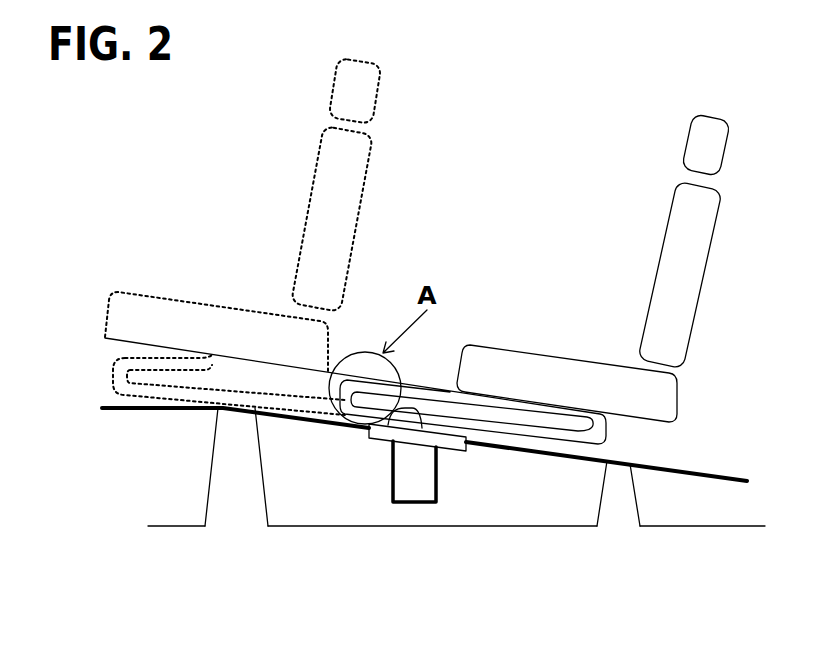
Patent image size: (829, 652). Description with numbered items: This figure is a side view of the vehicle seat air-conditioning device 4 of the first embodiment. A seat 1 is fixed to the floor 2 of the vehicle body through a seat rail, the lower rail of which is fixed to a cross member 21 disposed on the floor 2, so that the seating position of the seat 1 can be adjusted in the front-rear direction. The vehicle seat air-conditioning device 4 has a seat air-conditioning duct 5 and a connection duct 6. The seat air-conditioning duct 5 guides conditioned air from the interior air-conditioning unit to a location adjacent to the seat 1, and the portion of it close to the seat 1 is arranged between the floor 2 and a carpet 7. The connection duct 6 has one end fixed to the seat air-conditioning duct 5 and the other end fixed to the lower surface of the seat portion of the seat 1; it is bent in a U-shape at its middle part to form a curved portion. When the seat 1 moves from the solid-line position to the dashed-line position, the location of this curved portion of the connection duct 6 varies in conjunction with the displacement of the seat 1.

The seat 1 is at (700, 212).
The floor 2 is at (293, 527).
The vehicle seat air-conditioning device 4 is at (355, 476).
The seat air-conditioning duct 5 is at (420, 487).
The connection duct 6 is at (507, 431).
The carpet 7 is at (720, 468).
The cross member 21 is at (215, 483).